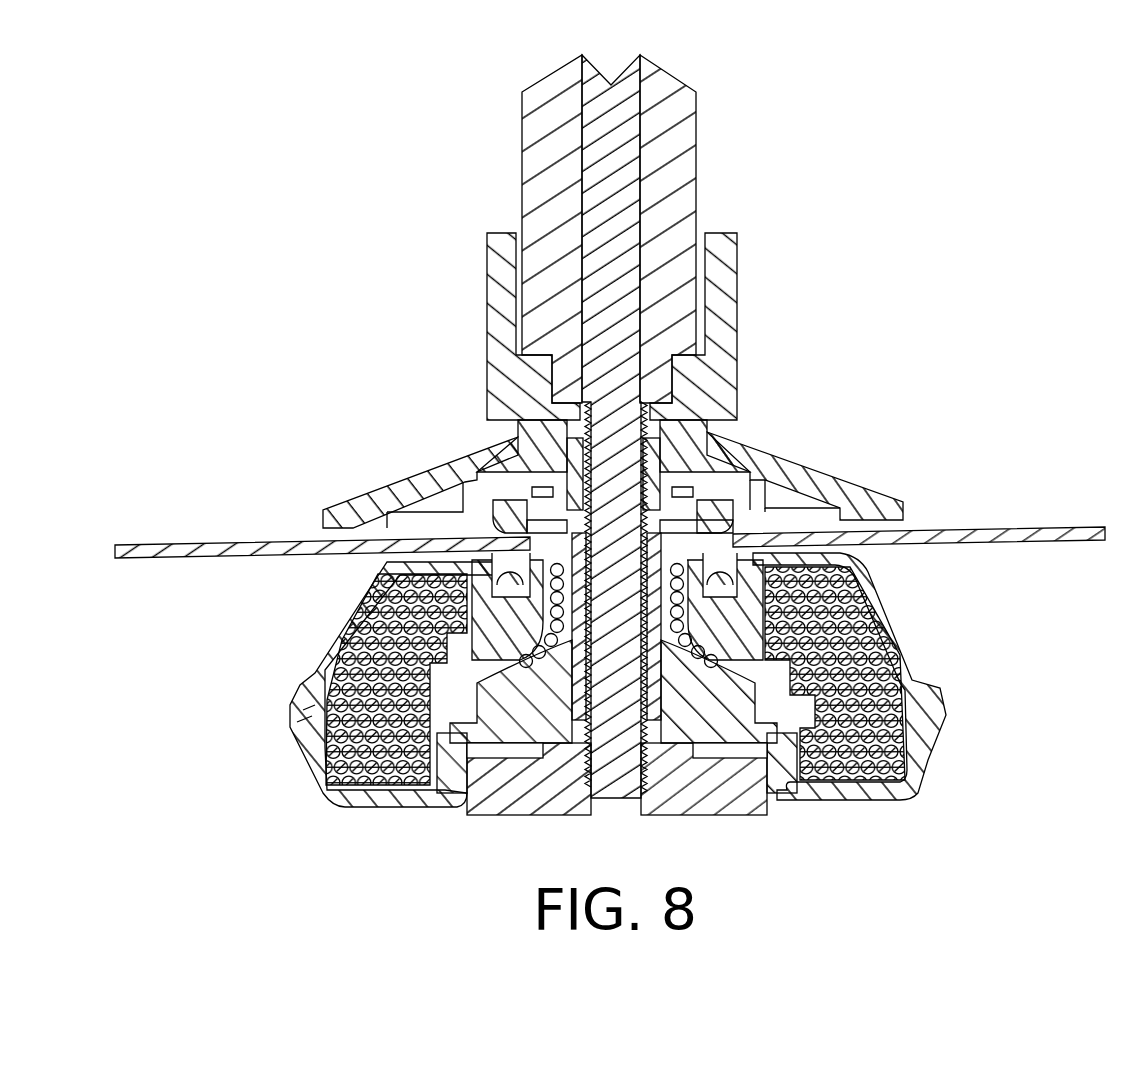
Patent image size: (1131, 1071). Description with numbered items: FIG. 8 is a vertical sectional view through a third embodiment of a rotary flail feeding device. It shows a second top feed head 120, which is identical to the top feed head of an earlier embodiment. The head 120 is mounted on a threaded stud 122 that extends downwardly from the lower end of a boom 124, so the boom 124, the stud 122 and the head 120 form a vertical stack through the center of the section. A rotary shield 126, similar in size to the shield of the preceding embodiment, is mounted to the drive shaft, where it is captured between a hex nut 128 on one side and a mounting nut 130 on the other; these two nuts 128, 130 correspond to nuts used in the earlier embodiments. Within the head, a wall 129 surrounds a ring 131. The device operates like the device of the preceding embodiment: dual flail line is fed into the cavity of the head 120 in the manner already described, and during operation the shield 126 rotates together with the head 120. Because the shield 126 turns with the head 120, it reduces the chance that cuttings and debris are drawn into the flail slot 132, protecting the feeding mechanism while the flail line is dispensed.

The second top feed head 120 is at (259, 708).
The threaded stud 122 is at (624, 790).
The boom 124 is at (696, 128).
The rotary shield 126 is at (790, 457).
The hex nut 128 is at (708, 433).
The wall 129 is at (457, 498).
The mounting nut 130 is at (737, 297).
The ring 131 is at (503, 498).
The flail slot 132 is at (848, 532).